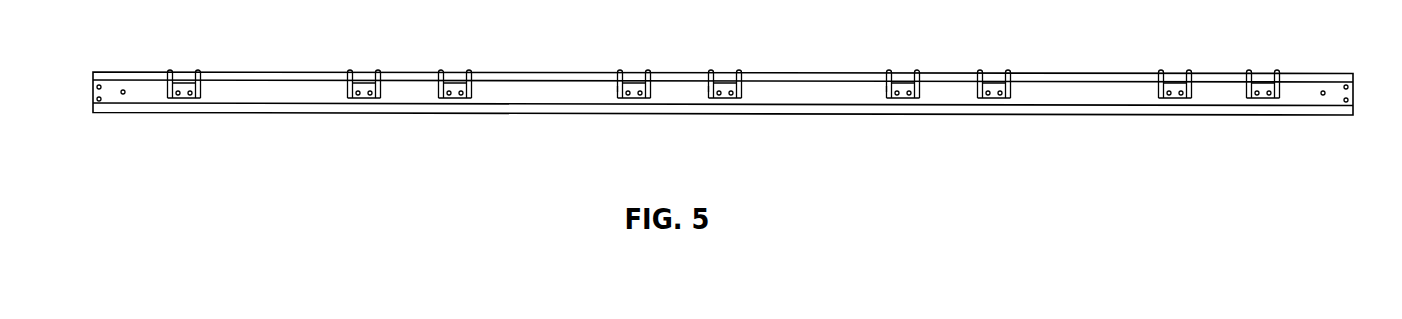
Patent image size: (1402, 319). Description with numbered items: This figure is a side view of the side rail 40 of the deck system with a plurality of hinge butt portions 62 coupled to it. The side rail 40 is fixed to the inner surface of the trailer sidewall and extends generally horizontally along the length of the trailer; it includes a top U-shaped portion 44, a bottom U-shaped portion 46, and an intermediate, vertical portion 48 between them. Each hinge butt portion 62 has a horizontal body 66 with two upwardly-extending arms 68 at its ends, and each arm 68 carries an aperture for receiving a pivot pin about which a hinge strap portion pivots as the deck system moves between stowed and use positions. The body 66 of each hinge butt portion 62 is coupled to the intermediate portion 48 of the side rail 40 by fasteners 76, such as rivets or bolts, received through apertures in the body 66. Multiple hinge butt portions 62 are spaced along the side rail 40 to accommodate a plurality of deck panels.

The side rail 40 is at (268, 71).
The top U-shaped portion 44 is at (136, 69).
The bottom U-shaped portion 46 is at (128, 117).
The intermediate vertical portion 48 is at (113, 92).
The hinge butt portion 62 is at (362, 69).
The horizontal body 66 is at (186, 97).
The upwardly-extending arm 68 is at (617, 88).
The fastener 76 is at (459, 97).